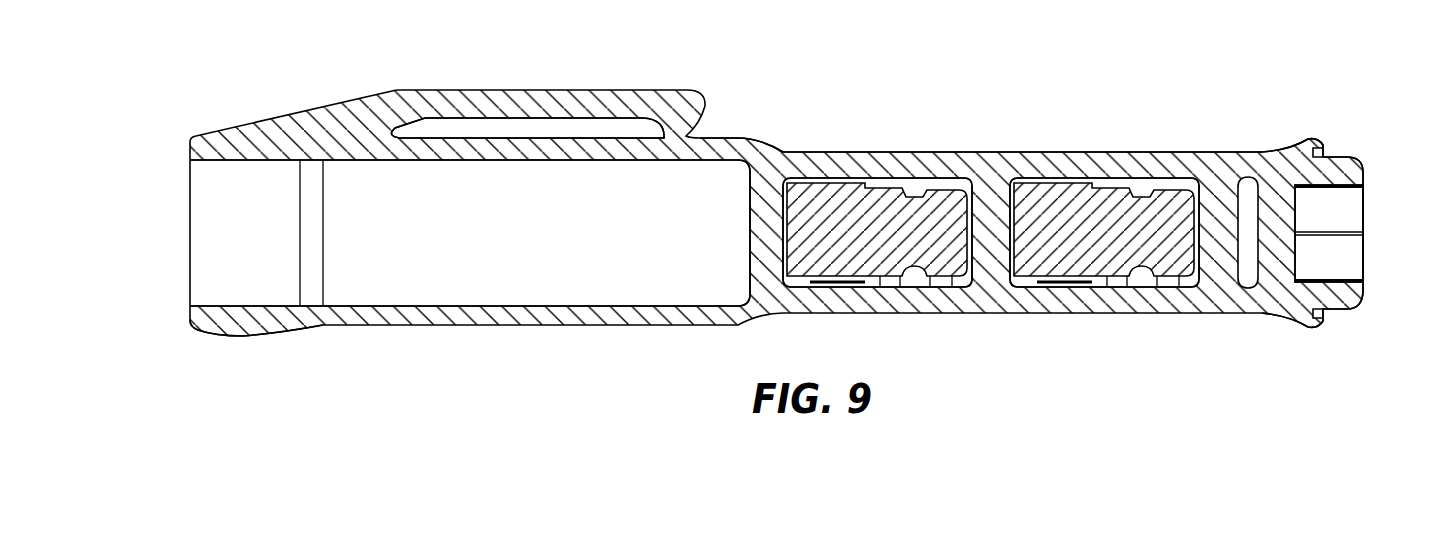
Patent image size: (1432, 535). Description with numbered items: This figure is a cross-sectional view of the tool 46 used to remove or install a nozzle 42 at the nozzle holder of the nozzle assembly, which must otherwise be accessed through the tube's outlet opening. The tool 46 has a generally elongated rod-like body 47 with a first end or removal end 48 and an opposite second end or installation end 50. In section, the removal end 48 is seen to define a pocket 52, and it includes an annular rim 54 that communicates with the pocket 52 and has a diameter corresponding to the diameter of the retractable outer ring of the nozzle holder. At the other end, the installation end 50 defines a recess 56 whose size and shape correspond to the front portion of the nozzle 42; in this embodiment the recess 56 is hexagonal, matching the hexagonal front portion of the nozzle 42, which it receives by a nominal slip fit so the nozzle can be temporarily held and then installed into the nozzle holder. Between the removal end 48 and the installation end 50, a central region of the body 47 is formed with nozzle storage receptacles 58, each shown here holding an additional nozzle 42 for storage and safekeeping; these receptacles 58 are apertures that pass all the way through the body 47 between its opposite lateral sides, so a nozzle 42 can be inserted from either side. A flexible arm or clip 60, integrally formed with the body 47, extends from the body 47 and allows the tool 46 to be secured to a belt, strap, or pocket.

The nozzle 42 is at (838, 262).
The tool 46 is at (837, 88).
The body 47 is at (747, 143).
The removal end 48 is at (250, 108).
The installation end 50 is at (1203, 130).
The pocket 52 is at (348, 198).
The annular rim 54 is at (190, 304).
The recess 56 is at (1312, 210).
The nozzle storage receptacles 58 is at (915, 320).
The clip 60 is at (525, 100).